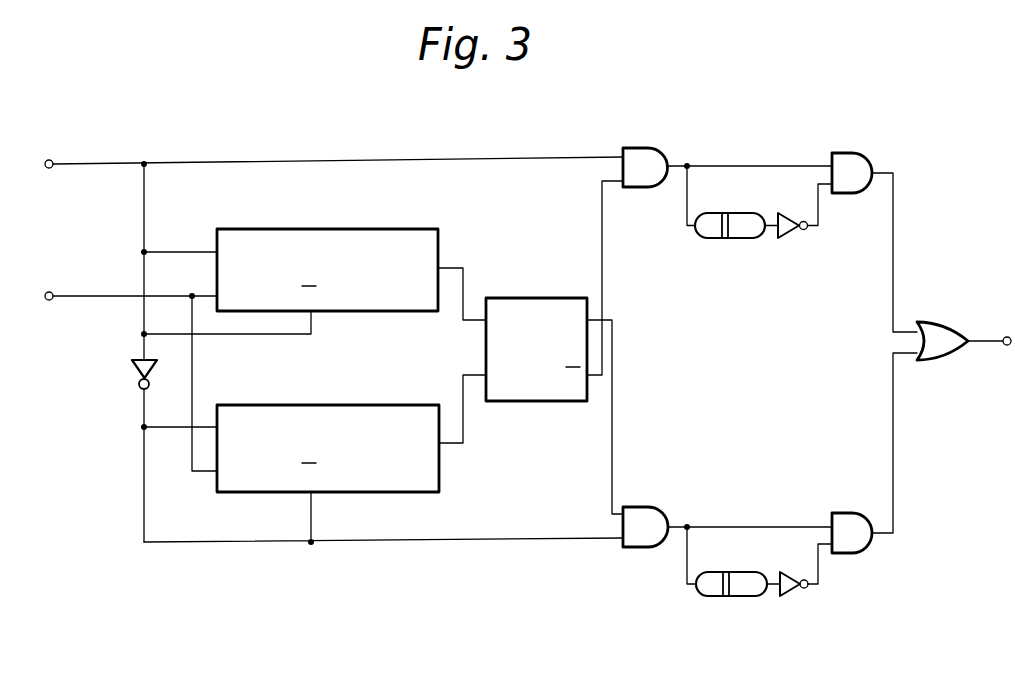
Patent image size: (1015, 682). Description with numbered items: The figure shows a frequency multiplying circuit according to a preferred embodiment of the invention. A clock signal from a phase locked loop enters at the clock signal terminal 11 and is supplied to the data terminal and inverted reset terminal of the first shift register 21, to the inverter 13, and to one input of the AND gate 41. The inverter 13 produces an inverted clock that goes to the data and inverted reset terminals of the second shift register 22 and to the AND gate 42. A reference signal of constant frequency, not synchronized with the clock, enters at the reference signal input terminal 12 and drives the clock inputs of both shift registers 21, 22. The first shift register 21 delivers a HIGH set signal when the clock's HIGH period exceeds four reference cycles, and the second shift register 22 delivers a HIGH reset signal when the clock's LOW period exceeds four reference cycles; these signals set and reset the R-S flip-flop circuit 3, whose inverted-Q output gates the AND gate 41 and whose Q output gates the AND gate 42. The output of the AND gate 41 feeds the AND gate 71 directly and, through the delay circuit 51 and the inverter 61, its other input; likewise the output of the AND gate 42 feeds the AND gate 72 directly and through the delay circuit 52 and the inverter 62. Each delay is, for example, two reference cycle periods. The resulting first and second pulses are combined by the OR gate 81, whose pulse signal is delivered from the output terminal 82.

The clock signal terminal 11 is at (52, 156).
The reference signal input terminal 12 is at (53, 290).
The inverter 13 is at (140, 370).
The first shift register 21 is at (370, 228).
The second shift register 22 is at (346, 404).
The R-S flip-flop circuit 3 is at (532, 297).
The AND gate 41 is at (651, 147).
The AND gate 42 is at (651, 506).
The delay circuit 51 is at (742, 239).
The delay circuit 52 is at (714, 597).
The inverter 61 is at (792, 236).
The inverter 62 is at (796, 594).
The AND gate 71 is at (850, 152).
The AND gate 72 is at (836, 512).
The OR gate 81 is at (931, 321).
The output terminal 82 is at (1007, 337).